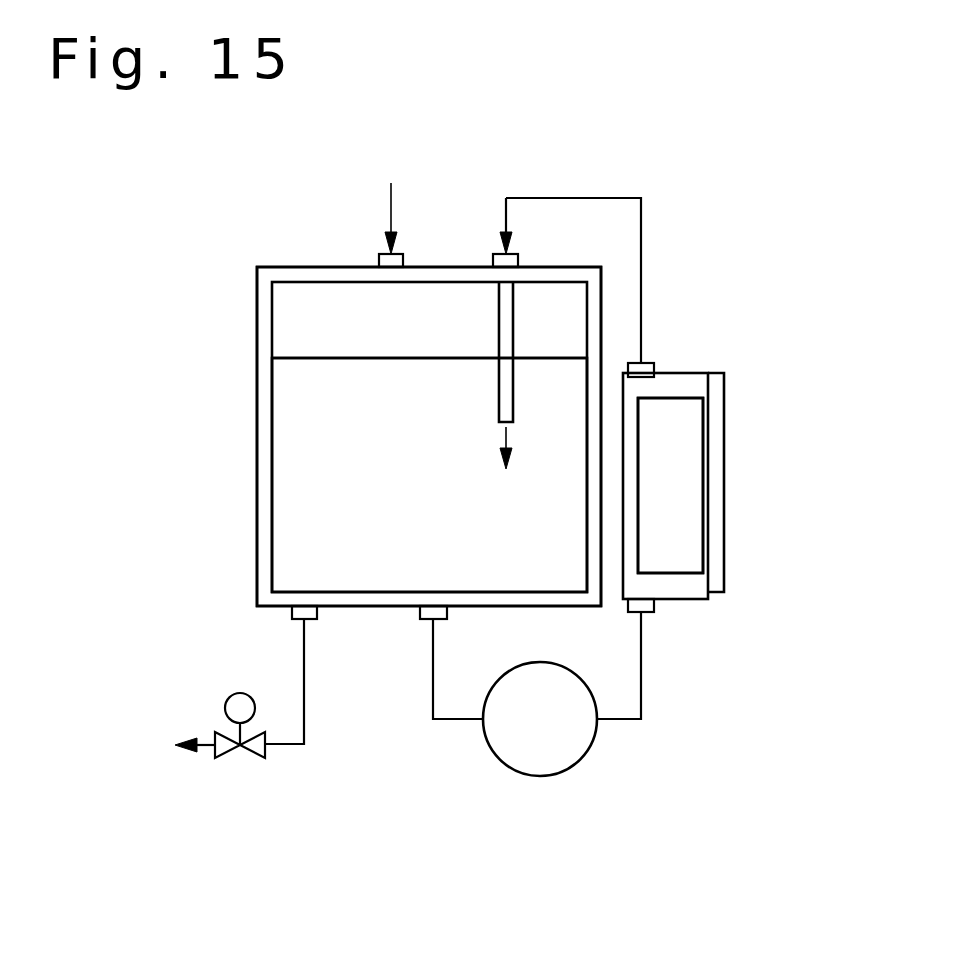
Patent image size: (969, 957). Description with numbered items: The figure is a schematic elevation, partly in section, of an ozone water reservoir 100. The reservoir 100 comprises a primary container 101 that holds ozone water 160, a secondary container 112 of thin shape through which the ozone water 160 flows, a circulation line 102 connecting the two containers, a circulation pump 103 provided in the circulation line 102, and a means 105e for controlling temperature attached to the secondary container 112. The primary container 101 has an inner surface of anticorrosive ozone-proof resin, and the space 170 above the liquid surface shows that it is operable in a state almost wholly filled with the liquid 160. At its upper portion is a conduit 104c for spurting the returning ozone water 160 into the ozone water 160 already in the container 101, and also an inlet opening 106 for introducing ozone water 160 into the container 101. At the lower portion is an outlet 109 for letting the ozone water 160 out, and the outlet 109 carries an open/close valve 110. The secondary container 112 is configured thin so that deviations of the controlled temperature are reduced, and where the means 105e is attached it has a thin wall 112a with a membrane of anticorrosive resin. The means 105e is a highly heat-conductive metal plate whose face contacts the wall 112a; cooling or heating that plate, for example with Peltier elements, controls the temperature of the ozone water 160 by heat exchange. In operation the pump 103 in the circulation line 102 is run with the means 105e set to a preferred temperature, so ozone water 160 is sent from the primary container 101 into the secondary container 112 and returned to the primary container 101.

The ozone water reservoir 100 is at (257, 265).
The primary container 101 is at (265, 424).
The gas space / liquid surface 170 is at (280, 322).
The ozone water 160 is at (280, 550).
The conduit 104c is at (499, 404).
The inlet opening 106 is at (378, 252).
The secondary container 112 is at (700, 380).
The thin wall 112a is at (707, 417).
The means for controlling temperature 105e is at (718, 479).
The outlet 109 is at (304, 735).
The open/close valve 110 is at (220, 752).
The circulation line 102 is at (641, 711).
The circulation pump 103 is at (583, 725).